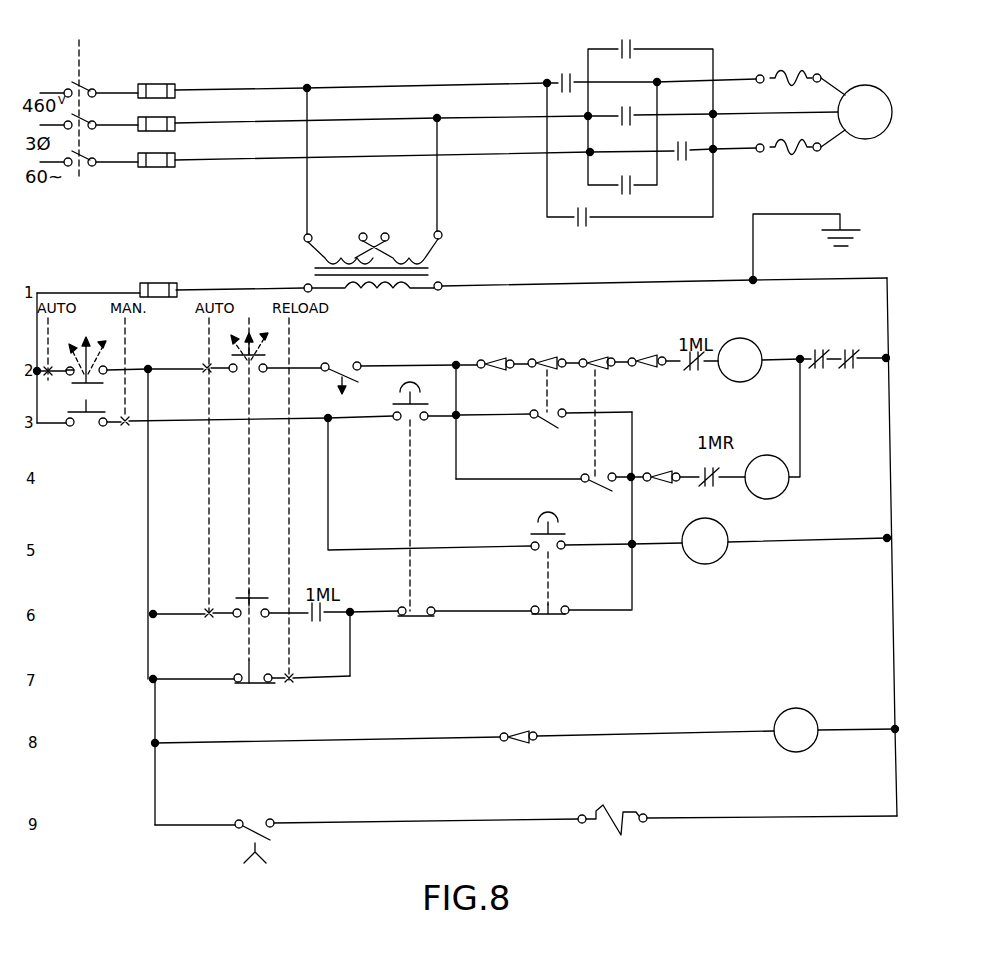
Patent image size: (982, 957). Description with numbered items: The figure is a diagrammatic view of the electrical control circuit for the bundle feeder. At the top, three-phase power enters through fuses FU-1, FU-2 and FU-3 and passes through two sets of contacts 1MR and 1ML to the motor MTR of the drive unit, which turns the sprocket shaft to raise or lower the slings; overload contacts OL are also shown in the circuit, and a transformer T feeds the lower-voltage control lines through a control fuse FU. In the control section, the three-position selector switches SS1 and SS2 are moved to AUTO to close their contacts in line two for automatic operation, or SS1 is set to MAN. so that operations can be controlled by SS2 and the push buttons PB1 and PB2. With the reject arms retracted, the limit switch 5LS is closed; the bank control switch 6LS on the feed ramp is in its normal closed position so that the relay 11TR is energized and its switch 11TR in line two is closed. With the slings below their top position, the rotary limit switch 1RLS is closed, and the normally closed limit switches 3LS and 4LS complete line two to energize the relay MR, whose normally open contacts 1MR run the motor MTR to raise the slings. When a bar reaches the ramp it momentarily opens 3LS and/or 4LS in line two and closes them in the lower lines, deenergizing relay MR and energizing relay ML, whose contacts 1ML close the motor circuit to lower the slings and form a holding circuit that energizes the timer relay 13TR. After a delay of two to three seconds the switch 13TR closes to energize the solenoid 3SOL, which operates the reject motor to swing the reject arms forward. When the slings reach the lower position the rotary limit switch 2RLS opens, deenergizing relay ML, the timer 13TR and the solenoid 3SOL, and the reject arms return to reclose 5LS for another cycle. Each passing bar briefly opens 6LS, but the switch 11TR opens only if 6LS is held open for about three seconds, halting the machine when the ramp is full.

The power line fuse 1 FU-1 is at (157, 80).
The power line fuse 2 FU-2 is at (157, 116).
The power line fuse 3 FU-3 is at (167, 168).
The control circuit fuse FU is at (158, 279).
The control transformer T is at (304, 271).
The motor MTR is at (865, 112).
The relay 1ML is at (625, 107).
The relay 1MR is at (607, 134).
The relay 1MR MR is at (740, 360).
The relay 1ML ML is at (767, 477).
The overload relay contacts OL is at (834, 350).
The three-position selector switch SS1 is at (182, 373).
The three-position selector switch SS2 is at (234, 361).
The relay 11TR is at (525, 546).
The timer relay 13TR is at (523, 690).
The push button PB1 is at (429, 494).
The push button PB2 is at (581, 556).
The limit switch 5LS is at (494, 352).
The limit switch 3LS is at (546, 381).
The limit switch 4LS is at (543, 412).
The bank control limit switch 6LS is at (518, 725).
The rotary limit switch 1RLS is at (652, 347).
The rotary limit switch 2RLS is at (665, 466).
The solenoid 3SOL is at (737, 811).